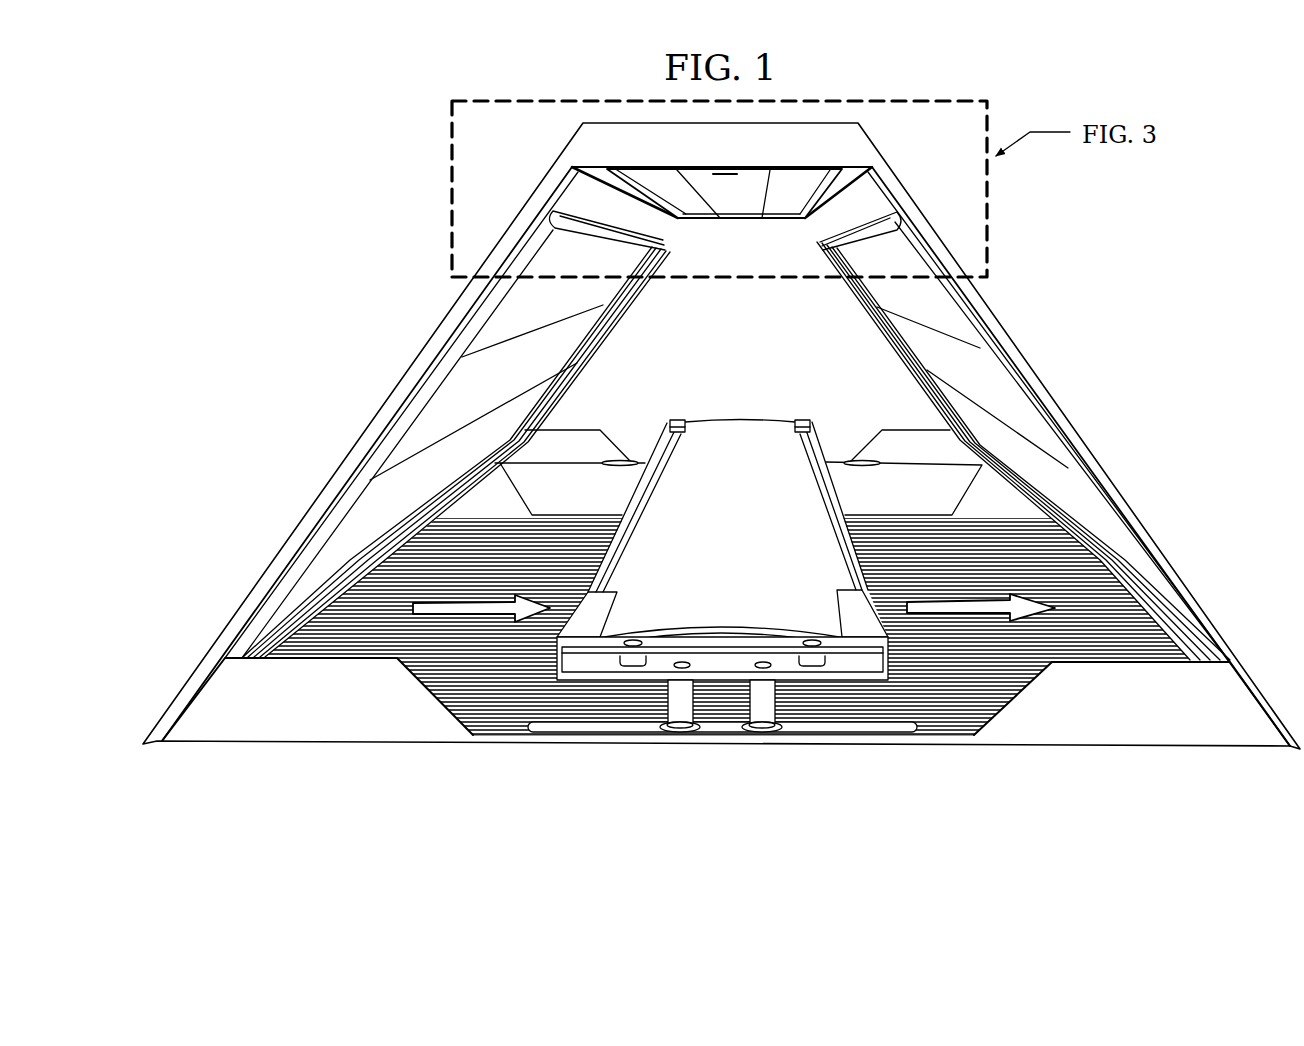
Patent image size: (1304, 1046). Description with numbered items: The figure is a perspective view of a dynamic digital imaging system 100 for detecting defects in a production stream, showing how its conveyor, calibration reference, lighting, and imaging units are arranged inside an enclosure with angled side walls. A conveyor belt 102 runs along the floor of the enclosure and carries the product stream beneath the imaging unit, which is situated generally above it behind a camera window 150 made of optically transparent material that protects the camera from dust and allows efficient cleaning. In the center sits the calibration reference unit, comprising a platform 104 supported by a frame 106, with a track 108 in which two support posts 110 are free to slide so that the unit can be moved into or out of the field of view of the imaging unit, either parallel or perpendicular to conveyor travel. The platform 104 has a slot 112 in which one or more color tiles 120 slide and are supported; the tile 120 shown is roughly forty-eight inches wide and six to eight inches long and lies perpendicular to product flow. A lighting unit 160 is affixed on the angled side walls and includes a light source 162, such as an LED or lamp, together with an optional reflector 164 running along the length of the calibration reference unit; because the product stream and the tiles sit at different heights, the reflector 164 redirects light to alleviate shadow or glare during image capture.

The system 100 is at (372, 246).
The conveyor belt 102 is at (493, 518).
The platform 104 is at (598, 607).
The frame 106 is at (518, 722).
The track 108 is at (852, 728).
The support posts 110 is at (652, 703).
The slot 112 is at (770, 643).
The color tiles 120 is at (762, 430).
The camera window 150 is at (735, 200).
The lighting unit 160 is at (640, 296).
The light source 162 is at (560, 310).
The reflector 164 is at (552, 358).